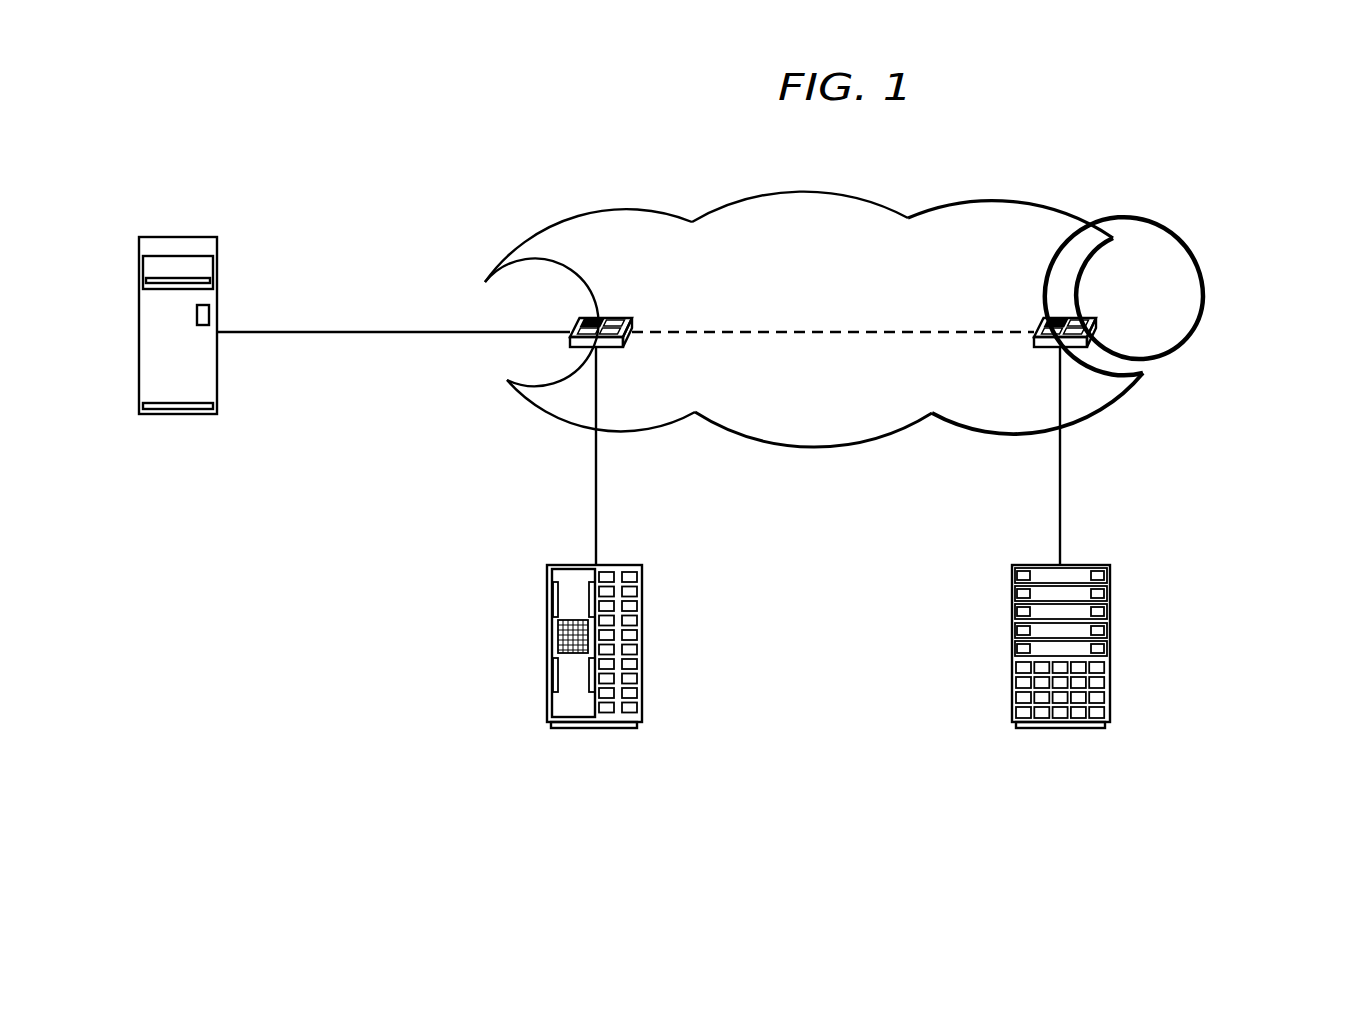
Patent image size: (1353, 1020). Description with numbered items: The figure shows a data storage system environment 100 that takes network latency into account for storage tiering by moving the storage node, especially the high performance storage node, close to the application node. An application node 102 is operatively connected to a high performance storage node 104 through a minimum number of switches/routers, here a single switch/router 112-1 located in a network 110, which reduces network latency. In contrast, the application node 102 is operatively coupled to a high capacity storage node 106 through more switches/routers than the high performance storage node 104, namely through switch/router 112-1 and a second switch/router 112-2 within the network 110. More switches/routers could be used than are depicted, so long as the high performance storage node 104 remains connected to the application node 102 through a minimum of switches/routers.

The data storage system environment 100 is at (1170, 156).
The application node 102 is at (182, 235).
The high performance storage node 104 is at (623, 563).
The high capacity storage node 106 is at (1085, 563).
The network 110 is at (898, 213).
The switch/router 112-1 is at (603, 317).
The switch/router 112-2 is at (1067, 315).